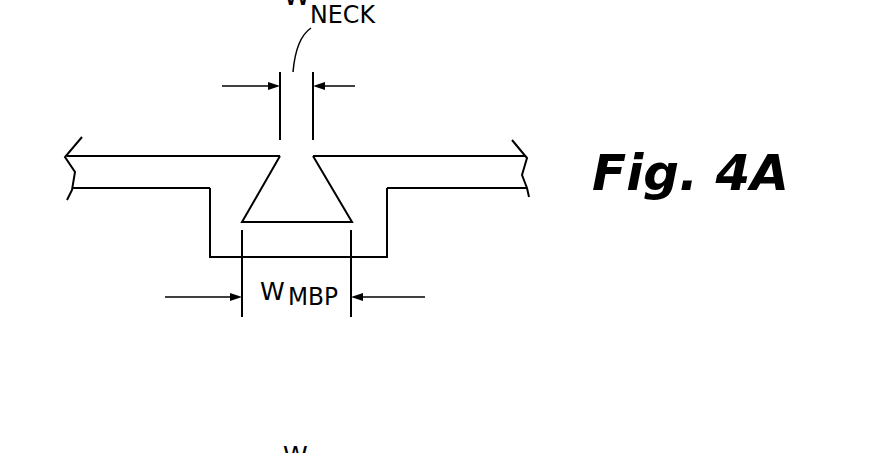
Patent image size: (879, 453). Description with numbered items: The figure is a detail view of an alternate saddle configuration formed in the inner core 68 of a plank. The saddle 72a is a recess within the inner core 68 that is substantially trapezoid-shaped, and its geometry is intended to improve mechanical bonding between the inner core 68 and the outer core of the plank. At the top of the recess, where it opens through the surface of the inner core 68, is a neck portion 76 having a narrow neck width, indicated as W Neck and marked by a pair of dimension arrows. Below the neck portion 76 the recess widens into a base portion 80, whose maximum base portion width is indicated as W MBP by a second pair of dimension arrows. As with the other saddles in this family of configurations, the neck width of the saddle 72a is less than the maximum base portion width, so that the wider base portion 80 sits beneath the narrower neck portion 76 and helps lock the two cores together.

The inner core 68 is at (477, 167).
The neck portion 76 is at (328, 140).
The base portion 80 is at (257, 197).
The saddle 72a is at (418, 243).